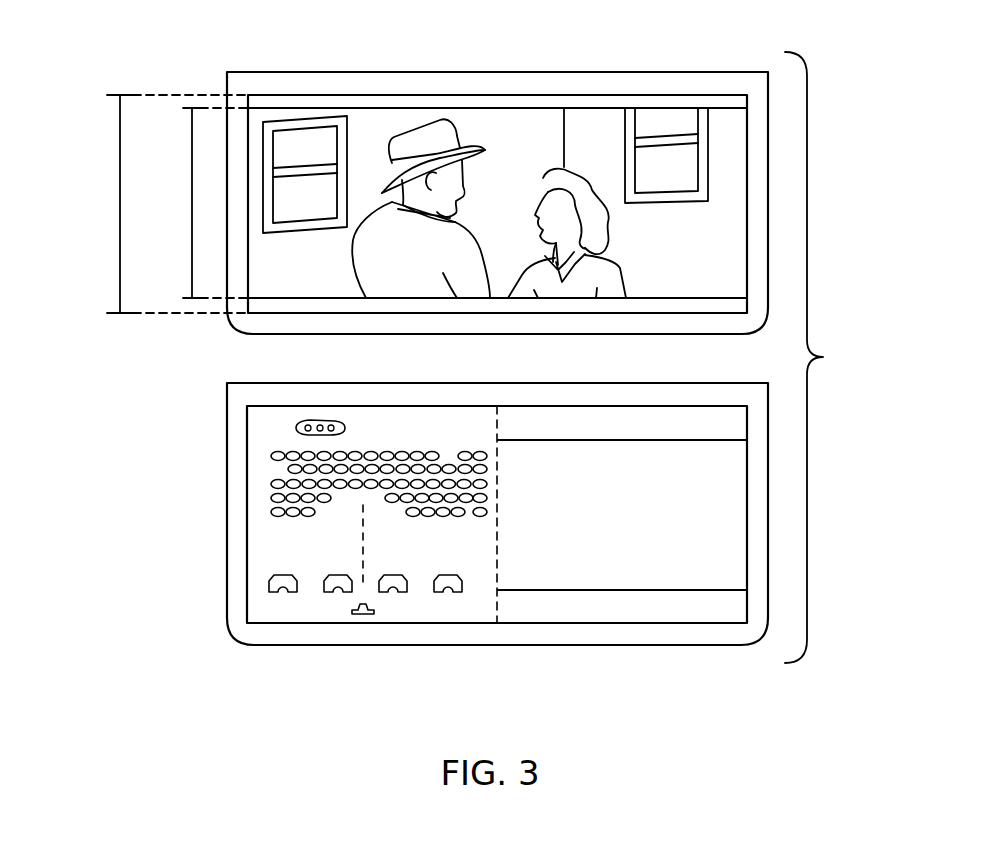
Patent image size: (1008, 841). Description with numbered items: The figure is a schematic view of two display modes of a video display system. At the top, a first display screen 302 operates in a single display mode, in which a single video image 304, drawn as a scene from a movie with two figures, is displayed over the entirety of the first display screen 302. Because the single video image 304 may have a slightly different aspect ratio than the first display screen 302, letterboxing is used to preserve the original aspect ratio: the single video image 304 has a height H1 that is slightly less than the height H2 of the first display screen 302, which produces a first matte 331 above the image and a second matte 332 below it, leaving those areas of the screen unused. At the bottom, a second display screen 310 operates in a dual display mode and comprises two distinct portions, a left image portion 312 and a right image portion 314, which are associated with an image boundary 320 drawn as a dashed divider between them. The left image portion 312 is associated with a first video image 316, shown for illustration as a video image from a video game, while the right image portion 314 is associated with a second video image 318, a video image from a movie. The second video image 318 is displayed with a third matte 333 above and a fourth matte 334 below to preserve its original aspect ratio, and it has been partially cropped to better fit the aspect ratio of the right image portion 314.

The first display screen 302 is at (495, 95).
The first matte 331 is at (360, 102).
The second matte 332 is at (310, 303).
The single video image 304 is at (710, 248).
The second display screen 310 is at (398, 625).
The left image portion 312 is at (323, 557).
The first video image 316 is at (265, 438).
The image boundary 320 is at (500, 422).
The third matte 333 is at (687, 428).
The fourth matte 334 is at (697, 608).
The second video image 318 is at (657, 472).
The right image portion 314 is at (625, 528).
The height of single video image H1 is at (192, 207).
The height of first display screen H2 is at (118, 188).